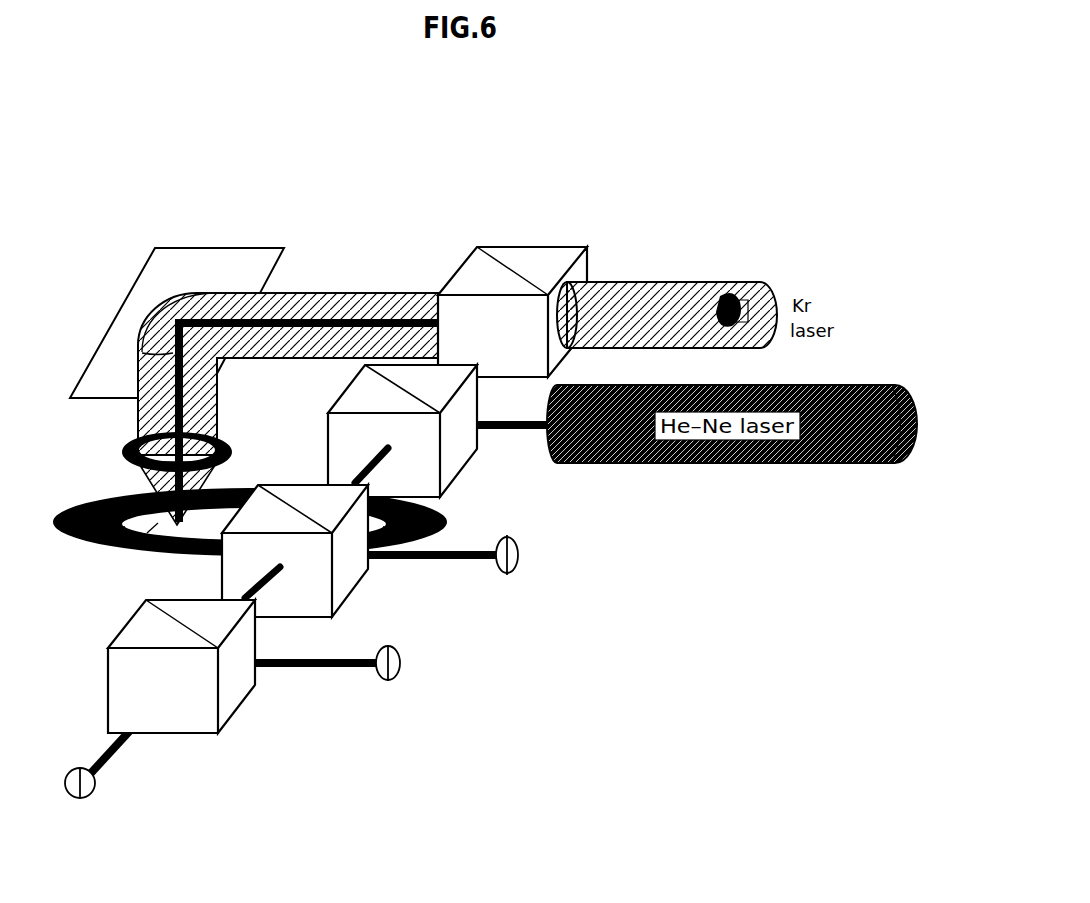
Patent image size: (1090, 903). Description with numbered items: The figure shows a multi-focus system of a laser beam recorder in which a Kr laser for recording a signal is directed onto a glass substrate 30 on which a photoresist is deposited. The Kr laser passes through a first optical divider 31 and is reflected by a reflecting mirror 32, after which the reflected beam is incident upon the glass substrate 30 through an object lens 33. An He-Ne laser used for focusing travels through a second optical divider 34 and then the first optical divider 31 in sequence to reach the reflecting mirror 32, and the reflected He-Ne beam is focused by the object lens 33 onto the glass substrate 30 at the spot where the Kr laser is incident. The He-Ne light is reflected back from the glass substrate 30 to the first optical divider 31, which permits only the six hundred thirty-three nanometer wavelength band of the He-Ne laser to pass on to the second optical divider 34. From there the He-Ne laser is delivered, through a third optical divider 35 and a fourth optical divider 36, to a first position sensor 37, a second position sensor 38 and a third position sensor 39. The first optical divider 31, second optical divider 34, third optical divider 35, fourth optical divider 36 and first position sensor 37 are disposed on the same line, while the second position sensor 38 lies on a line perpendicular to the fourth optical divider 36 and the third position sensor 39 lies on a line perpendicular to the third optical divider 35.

The glass substrate 30 is at (132, 552).
The first optical divider 31 is at (541, 262).
The reflecting mirror 32 is at (219, 246).
The object lens 33 is at (122, 453).
The second optical divider 34 is at (465, 448).
The third optical divider 35 is at (352, 587).
The fourth optical divider 36 is at (237, 698).
The first position sensor 37 is at (85, 798).
The second position sensor 38 is at (397, 673).
The third position sensor 39 is at (515, 562).